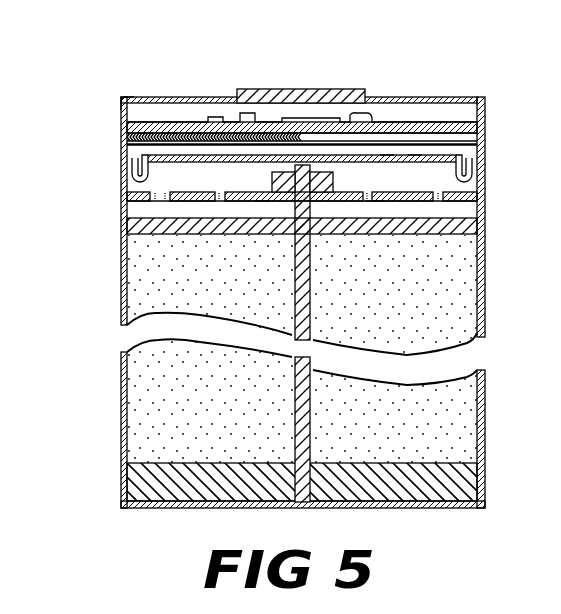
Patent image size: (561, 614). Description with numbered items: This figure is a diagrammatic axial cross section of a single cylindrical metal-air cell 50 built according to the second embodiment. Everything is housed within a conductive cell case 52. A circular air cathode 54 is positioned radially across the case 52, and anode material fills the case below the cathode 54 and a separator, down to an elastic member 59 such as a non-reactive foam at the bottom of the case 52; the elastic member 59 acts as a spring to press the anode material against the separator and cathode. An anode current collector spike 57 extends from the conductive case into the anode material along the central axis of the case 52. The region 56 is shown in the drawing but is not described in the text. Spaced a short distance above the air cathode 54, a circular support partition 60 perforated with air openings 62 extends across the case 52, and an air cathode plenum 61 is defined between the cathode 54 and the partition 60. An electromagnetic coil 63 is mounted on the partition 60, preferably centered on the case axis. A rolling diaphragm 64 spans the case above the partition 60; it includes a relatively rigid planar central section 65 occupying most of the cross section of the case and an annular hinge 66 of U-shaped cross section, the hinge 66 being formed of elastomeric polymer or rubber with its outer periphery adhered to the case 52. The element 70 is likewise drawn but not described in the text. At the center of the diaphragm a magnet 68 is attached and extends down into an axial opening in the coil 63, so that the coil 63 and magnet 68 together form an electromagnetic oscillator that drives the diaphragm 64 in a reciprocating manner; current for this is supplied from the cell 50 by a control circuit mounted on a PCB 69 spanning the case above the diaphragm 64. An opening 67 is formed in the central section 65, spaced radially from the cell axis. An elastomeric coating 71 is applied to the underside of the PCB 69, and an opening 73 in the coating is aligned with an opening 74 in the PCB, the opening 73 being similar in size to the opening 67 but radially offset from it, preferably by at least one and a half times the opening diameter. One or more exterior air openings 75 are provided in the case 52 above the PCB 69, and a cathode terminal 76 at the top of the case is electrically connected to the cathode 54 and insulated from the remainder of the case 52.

The metal-air cell 50 is at (100, 95).
The conductive cell case 52 is at (485, 272).
The air cathode 54 is at (478, 228).
The electrode body 56 is at (450, 325).
The anode current collector spike 57 is at (303, 311).
The elastic member 59 is at (460, 486).
The support partition 60 is at (262, 201).
The air cathode plenum 61 is at (465, 209).
The air openings 62 is at (375, 199).
The electromagnetic coil 63 is at (272, 180).
The rolling diaphragm 64 is at (387, 148).
The central section 65 is at (160, 163).
The annular hinge 66 is at (140, 183).
The opening 67 is at (415, 155).
The magnet 68 is at (315, 166).
The PCB 69 is at (468, 118).
The cup 70 is at (127, 150).
The elastomeric coating 71 is at (470, 150).
The opening 73 is at (186, 140).
The opening 74 is at (180, 130).
The exterior air openings 75 is at (150, 97).
The cathode terminal 76 is at (298, 89).